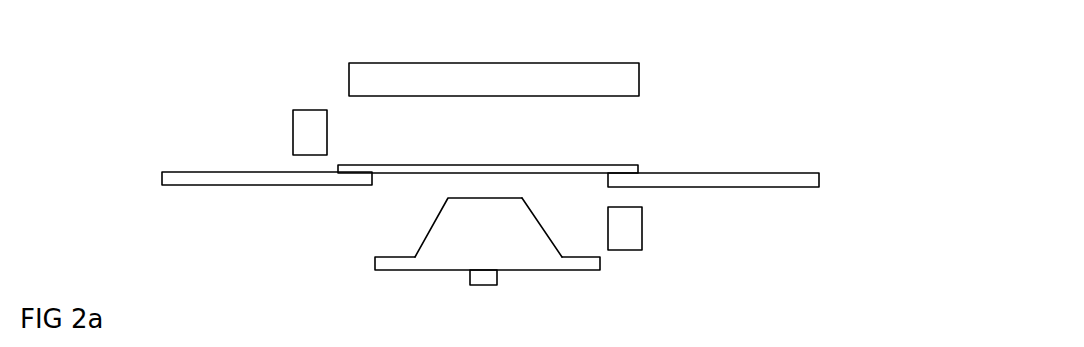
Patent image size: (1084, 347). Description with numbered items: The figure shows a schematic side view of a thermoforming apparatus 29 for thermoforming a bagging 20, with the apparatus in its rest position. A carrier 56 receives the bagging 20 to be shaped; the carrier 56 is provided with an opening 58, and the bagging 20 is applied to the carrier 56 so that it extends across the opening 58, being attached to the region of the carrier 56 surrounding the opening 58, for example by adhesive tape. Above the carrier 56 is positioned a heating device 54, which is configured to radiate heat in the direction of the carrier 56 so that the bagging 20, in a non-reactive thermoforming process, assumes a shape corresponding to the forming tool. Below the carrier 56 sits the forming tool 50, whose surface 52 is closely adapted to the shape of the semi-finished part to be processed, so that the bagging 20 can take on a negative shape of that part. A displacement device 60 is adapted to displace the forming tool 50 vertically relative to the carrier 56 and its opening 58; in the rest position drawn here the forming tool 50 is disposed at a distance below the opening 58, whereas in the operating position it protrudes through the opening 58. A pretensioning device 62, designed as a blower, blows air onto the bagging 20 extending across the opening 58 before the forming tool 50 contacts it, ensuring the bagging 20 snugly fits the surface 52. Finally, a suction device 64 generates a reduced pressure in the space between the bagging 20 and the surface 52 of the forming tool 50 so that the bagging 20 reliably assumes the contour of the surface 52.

The bagging 20 is at (493, 165).
The thermoforming apparatus 29 is at (740, 127).
The forming tool 50 is at (437, 238).
The surface 52 is at (533, 213).
The heating device 54 is at (370, 82).
The carrier 56 is at (182, 177).
The opening 58 is at (600, 183).
The displacement device 60 is at (485, 282).
The pretensioning device 62 is at (628, 217).
The suction device 64 is at (300, 137).